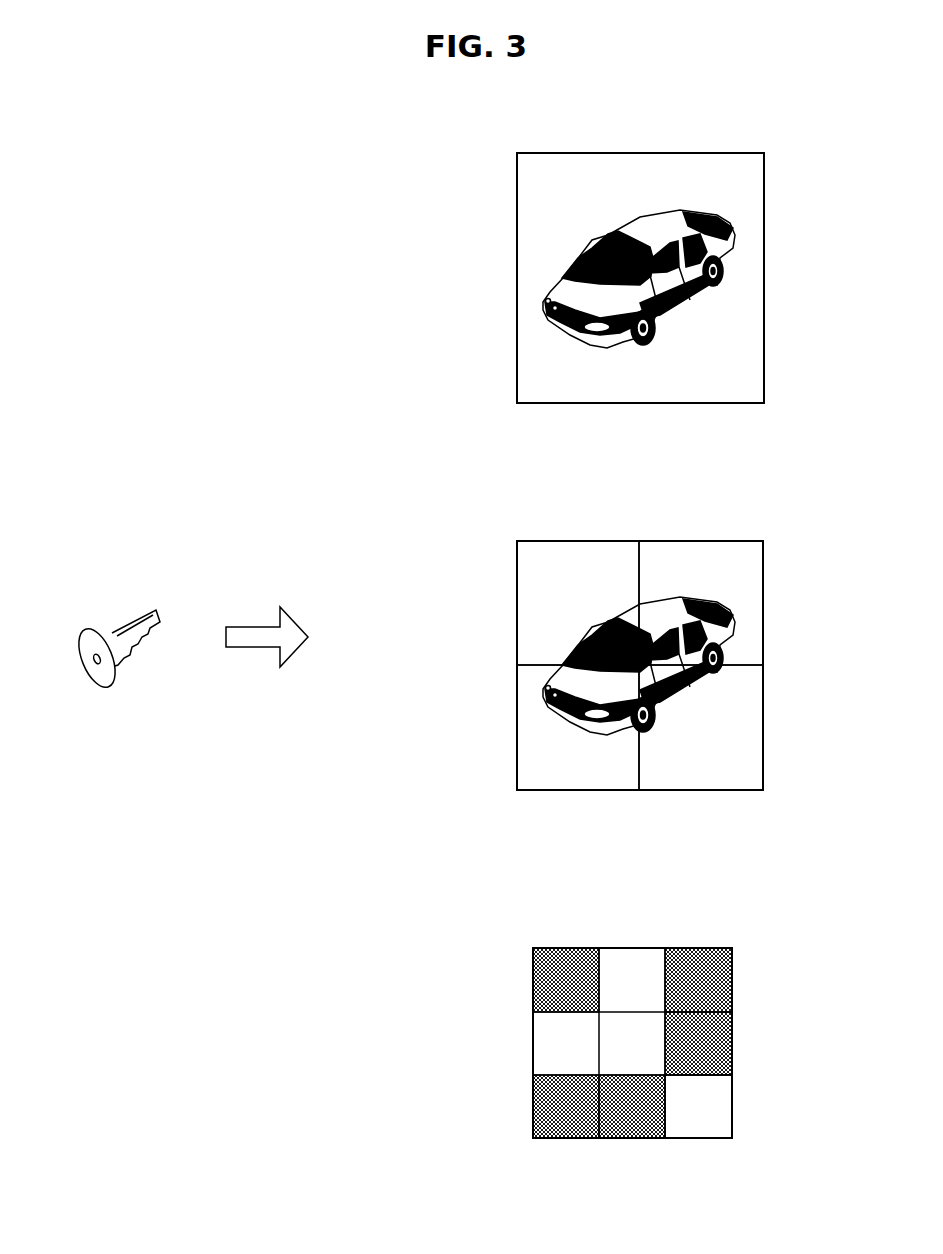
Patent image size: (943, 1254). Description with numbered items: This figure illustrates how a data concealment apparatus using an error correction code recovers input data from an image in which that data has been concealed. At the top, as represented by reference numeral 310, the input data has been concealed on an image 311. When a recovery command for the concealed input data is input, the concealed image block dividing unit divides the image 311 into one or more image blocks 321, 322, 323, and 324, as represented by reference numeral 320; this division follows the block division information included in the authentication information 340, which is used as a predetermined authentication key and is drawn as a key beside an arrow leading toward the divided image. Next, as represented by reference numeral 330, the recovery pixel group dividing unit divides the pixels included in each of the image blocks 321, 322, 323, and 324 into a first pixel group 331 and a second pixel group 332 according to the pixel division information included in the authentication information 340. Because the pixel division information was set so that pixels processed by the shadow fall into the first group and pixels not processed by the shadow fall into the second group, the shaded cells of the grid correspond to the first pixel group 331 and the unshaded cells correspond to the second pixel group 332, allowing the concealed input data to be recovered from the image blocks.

The concealed image representation 310 is at (665, 133).
The image 311 is at (536, 238).
The divided image representation 320 is at (664, 520).
The image block 321 is at (535, 597).
The image block 322 is at (740, 598).
The image block 323 is at (538, 761).
The image block 324 is at (720, 761).
The pixel group division representation 330 is at (657, 929).
The first pixel group 331 is at (557, 981).
The second pixel group 332 is at (703, 1114).
The authentication information 340 is at (165, 616).